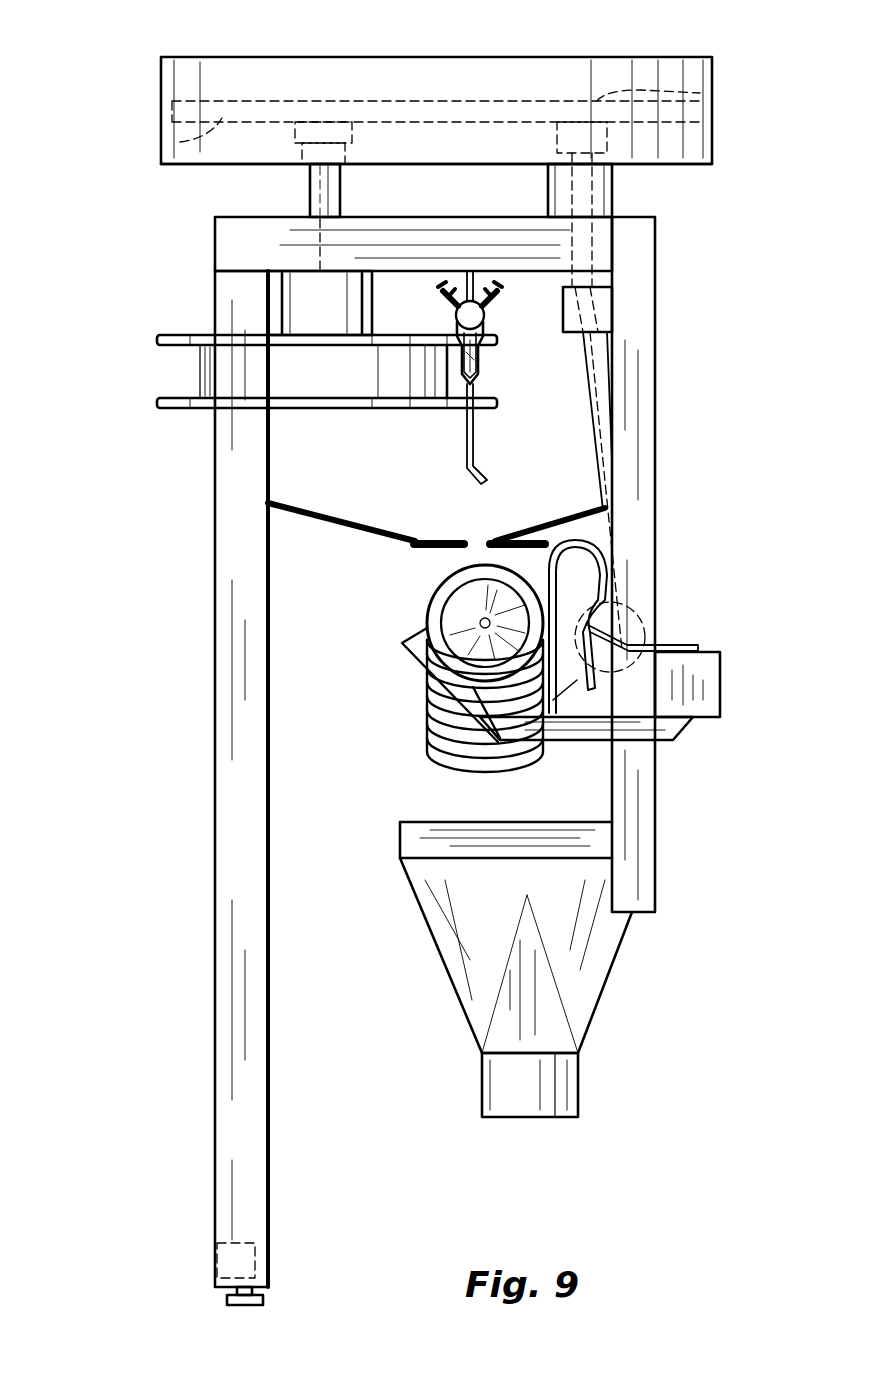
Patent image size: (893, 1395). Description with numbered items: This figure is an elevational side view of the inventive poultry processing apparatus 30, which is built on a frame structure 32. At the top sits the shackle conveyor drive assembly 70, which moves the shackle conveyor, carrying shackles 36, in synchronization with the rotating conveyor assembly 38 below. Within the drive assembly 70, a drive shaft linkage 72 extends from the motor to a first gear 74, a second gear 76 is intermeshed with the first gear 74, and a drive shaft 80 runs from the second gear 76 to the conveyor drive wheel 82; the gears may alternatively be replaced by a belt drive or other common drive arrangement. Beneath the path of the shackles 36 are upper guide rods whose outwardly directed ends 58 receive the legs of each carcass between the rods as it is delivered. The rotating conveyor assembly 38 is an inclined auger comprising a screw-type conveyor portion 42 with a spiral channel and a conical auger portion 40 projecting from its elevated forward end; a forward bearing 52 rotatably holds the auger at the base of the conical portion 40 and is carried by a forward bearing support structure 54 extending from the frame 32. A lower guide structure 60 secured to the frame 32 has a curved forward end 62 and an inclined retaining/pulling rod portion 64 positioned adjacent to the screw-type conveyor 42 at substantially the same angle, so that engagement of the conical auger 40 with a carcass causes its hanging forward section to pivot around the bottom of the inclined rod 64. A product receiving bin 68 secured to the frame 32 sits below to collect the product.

The processing apparatus 30 is at (146, 51).
The frame structure 32 is at (235, 245).
The shackles 36 is at (470, 458).
The rotating conveyor assembly 38 is at (428, 706).
The conical auger portion 40 is at (463, 610).
The screw-type conveyor portion 42 is at (435, 703).
The forward bearing 52 is at (428, 635).
The forward bearing support structure 54 is at (560, 730).
The outwardly directed ends 58 is at (460, 537).
The lower guide structure 60 is at (663, 626).
The curved forward end 62 is at (602, 563).
The inclined retaining/pulling rod portion 64 is at (557, 605).
The product receiving bin 68 is at (465, 972).
The shackle conveyor drive assembly 70 is at (540, 60).
The drive shaft linkage 72 is at (600, 407).
The first gear 74 is at (700, 93).
The second gear 76 is at (161, 143).
The drive shaft 80 is at (318, 188).
The conveyor drive wheel 82 is at (155, 335).